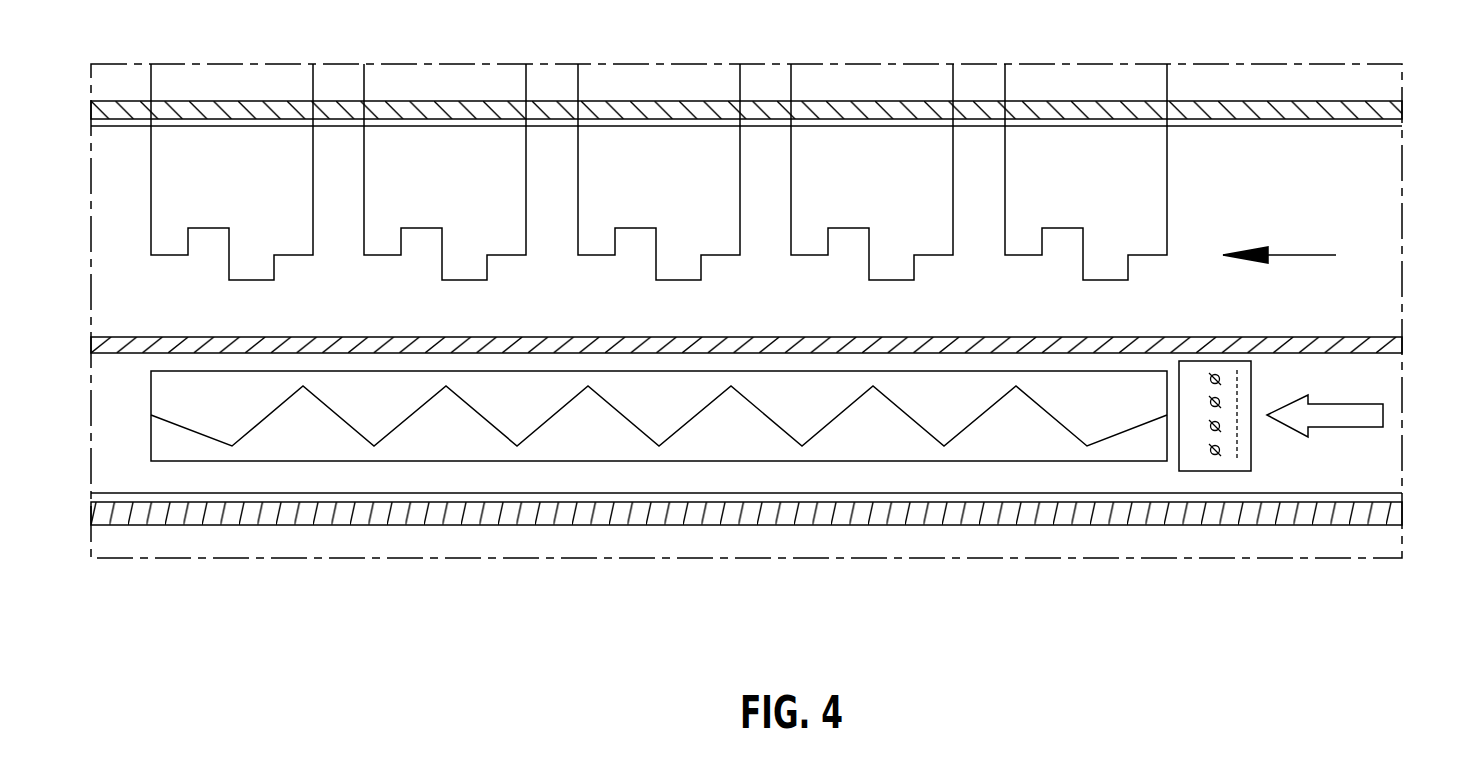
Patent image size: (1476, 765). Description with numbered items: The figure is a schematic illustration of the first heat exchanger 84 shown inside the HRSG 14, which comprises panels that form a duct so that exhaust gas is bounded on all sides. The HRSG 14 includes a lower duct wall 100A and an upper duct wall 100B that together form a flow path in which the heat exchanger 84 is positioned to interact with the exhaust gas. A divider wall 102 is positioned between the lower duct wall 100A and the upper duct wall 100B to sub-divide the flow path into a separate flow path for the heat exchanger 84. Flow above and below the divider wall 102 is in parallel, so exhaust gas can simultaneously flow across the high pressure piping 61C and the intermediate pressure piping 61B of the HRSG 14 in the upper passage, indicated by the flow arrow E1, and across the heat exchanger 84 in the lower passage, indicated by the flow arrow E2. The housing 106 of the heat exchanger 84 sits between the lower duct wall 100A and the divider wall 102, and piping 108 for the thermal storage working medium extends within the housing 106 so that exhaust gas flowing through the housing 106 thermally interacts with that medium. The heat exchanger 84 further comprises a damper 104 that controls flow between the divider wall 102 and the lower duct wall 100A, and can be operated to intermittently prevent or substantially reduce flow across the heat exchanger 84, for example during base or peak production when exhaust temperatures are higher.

The HRSG 14 is at (1392, 86).
The upper duct wall 100B is at (768, 118).
The lower duct wall 100A is at (747, 526).
The intermediate pressure piping 61B is at (953, 172).
The high pressure piping 61C is at (1167, 162).
The divider wall 102 is at (748, 336).
The first heat exchanger 84 is at (946, 381).
The housing 106 is at (427, 462).
The piping 108 is at (623, 417).
The damper 104 is at (1215, 472).
The first air flow E1 is at (1301, 255).
The second air flow E2 is at (1339, 404).